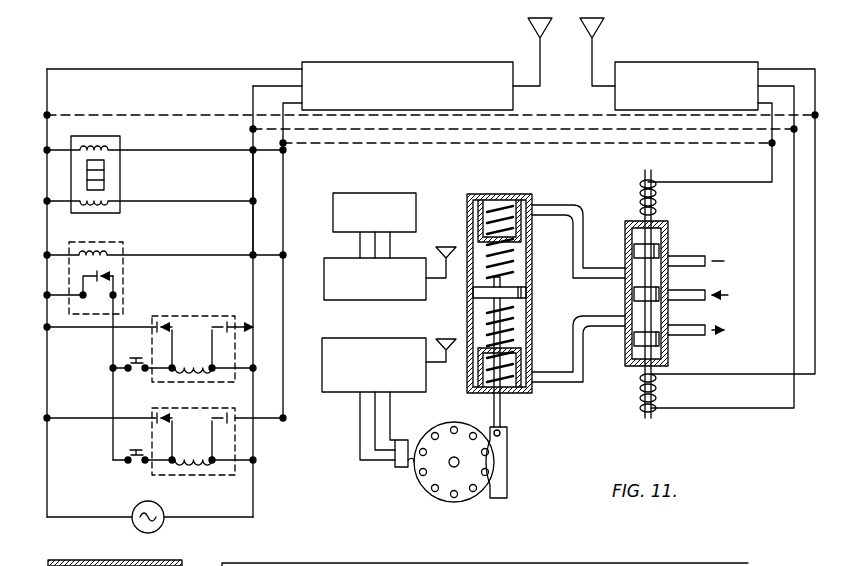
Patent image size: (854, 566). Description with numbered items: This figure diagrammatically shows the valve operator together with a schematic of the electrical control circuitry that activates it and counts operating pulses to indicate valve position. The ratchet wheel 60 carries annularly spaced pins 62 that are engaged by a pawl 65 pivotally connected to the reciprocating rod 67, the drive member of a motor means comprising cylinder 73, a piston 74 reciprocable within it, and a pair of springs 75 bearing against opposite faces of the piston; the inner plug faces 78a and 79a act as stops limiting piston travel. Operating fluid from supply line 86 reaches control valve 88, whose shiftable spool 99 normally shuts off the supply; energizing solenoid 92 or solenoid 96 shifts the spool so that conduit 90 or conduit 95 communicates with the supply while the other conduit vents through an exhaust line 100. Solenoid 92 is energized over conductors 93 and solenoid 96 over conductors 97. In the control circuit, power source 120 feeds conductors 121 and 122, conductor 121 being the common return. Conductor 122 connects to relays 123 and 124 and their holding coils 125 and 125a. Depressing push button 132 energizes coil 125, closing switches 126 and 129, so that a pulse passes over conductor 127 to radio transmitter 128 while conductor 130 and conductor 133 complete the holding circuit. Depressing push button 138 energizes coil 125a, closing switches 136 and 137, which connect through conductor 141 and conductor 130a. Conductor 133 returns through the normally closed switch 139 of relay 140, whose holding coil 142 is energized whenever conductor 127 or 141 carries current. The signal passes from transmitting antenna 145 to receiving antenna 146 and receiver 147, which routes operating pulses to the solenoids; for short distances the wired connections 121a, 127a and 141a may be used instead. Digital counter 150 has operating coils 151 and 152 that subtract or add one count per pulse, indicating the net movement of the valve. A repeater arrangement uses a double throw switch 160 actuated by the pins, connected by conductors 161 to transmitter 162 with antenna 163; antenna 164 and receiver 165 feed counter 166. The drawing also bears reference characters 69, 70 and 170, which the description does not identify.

The ratchet wheel 60 is at (455, 508).
The pins 62 is at (428, 488).
The pawl 65 is at (502, 466).
The reciprocating rod 67 is at (500, 414).
The pin 69 is at (490, 430).
The pin 70 is at (488, 484).
The cylinder 73 is at (532, 333).
The piston 74 is at (532, 288).
The springs 75 is at (478, 275).
The inner face of plug 78a is at (522, 244).
The inner face of plug 79a is at (526, 350).
The supply line 86 is at (692, 288).
The control valve 88 is at (622, 226).
The conduit 90 is at (582, 366).
The solenoid 92 is at (638, 395).
The electrical conductors 93 is at (755, 374).
The second conduit 95 is at (585, 270).
The solenoid 96 is at (658, 196).
The conductors 97 is at (783, 214).
The shiftable spool 99 is at (642, 284).
The exhaust line 100 is at (682, 252).
The power source 120 is at (162, 528).
The conductor 121 is at (47, 480).
The wired connection 121a is at (492, 115).
The conductor 122 is at (253, 500).
The relay 123 is at (208, 475).
The relay 124 is at (178, 383).
The holding coil 125 is at (196, 452).
The holding coil 125a is at (212, 366).
The switch 126 is at (222, 430).
The conductor 127 is at (283, 297).
The wired connection 127a is at (700, 143).
The radio transmitter 128 is at (377, 62).
The switch 129 is at (162, 424).
The conductor 130 is at (73, 416).
The conductor 130a is at (47, 330).
The push button 132 is at (134, 468).
The conductor 133 is at (108, 360).
The switch 136 is at (225, 322).
The switch 137 is at (160, 324).
The push button 138 is at (136, 374).
The normally closed switch 139 is at (103, 284).
The relay 140 is at (123, 248).
The conductor 141 is at (253, 232).
The wired connection 141a is at (560, 129).
The holding coil 142 is at (97, 248).
The transmitting antenna 145 is at (540, 46).
The receiving antenna 146 is at (596, 44).
The receiver 147 is at (712, 62).
The digital counter 150 is at (120, 143).
The operating coil 151 is at (112, 206).
The operating coil 152 is at (100, 145).
The double throw switch 160 is at (400, 468).
The conductors 161 is at (360, 410).
The radio transmitter 162 is at (345, 338).
The antenna 163 is at (455, 336).
The antenna 164 is at (462, 246).
The receiver 165 is at (324, 270).
The counter 166 is at (368, 193).
The plate 170 is at (108, 560).